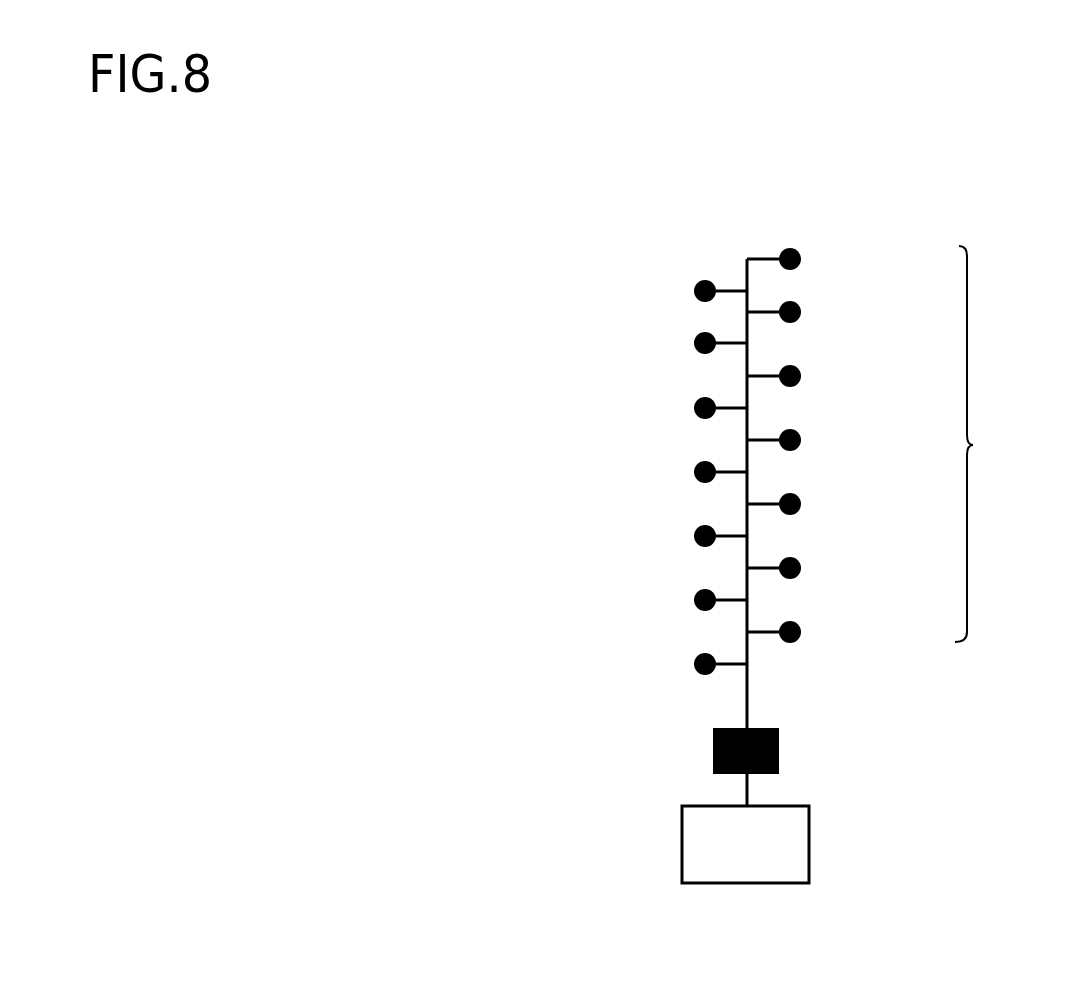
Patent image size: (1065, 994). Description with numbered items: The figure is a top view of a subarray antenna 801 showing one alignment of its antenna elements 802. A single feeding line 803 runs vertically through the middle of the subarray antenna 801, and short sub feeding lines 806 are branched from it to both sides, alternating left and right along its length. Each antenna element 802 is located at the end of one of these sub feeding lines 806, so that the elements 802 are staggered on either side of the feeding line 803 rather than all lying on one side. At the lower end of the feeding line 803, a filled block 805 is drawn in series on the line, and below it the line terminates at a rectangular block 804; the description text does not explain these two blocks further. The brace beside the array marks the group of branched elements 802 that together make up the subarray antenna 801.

The subarray antenna 801 is at (1006, 444).
The antenna element 802 is at (800, 310).
The feeding line 803 is at (748, 597).
The transceiver unit 804 is at (809, 837).
The connector 805 is at (713, 750).
The sub feeding line 806 is at (771, 316).